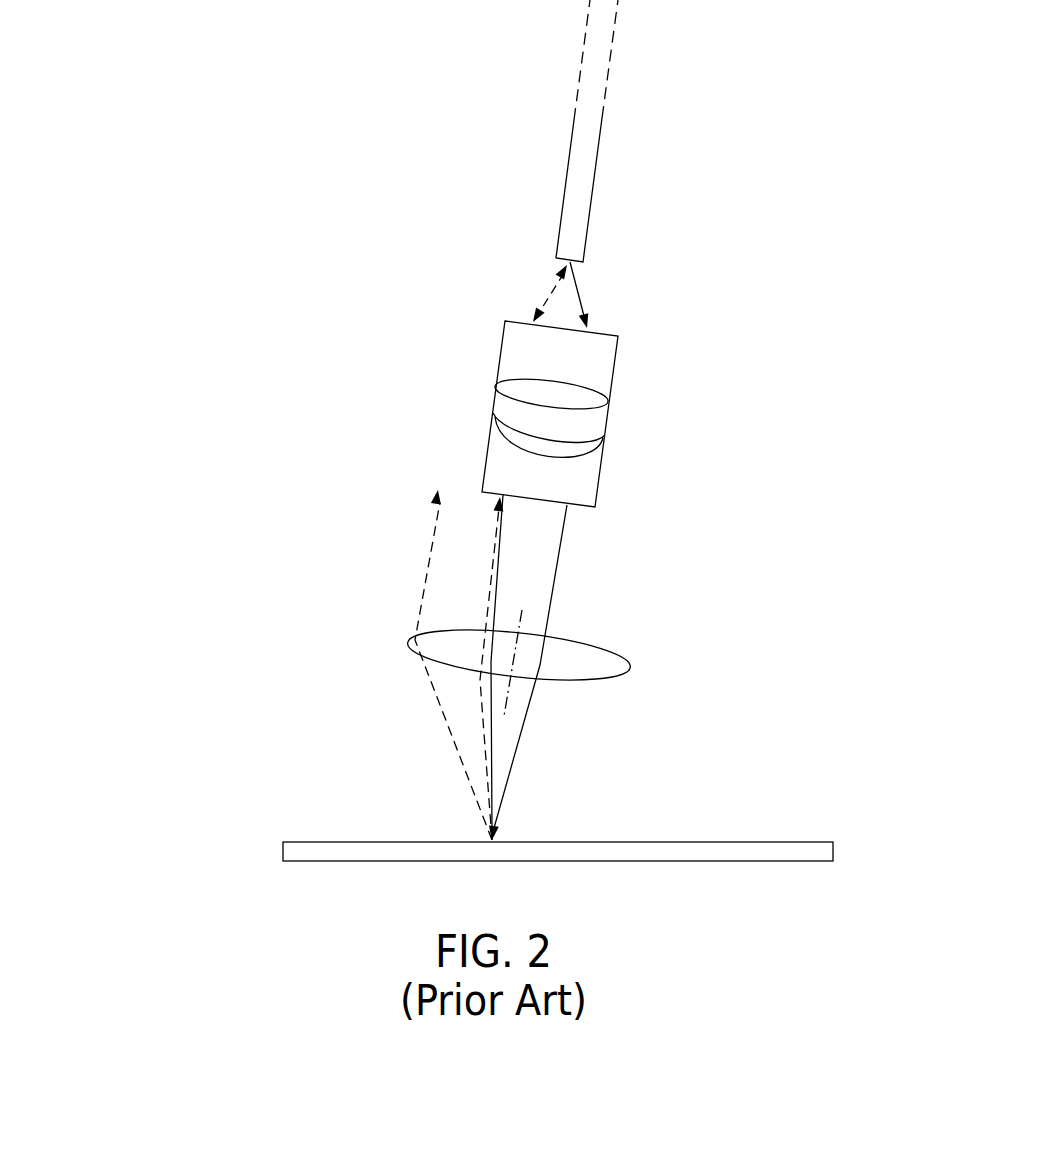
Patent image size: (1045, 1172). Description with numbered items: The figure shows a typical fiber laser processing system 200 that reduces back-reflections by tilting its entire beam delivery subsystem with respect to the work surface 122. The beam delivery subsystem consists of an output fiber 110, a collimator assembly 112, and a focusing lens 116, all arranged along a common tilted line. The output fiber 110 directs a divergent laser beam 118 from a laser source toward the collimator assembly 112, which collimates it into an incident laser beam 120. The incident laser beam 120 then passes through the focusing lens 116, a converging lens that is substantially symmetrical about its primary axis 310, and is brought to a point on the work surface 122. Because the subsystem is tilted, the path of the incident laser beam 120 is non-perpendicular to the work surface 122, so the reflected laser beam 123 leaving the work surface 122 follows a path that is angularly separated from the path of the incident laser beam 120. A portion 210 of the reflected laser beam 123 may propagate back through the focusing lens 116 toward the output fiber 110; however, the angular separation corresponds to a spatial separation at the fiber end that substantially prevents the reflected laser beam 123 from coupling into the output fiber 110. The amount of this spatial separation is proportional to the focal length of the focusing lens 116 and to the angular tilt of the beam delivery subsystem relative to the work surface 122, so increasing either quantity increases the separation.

The fiber laser processing system 200 is at (358, 156).
The output fiber 110 is at (591, 203).
The divergent laser beam 118 is at (584, 289).
The portion of the reflected laser beam 210 is at (543, 300).
The collimator assembly 112 is at (608, 388).
The incident laser beam 120 is at (563, 545).
The primary axis 310 is at (519, 607).
The focusing lens 116 is at (603, 647).
The reflected laser beam 123 is at (440, 720).
The work surface 122 is at (373, 840).